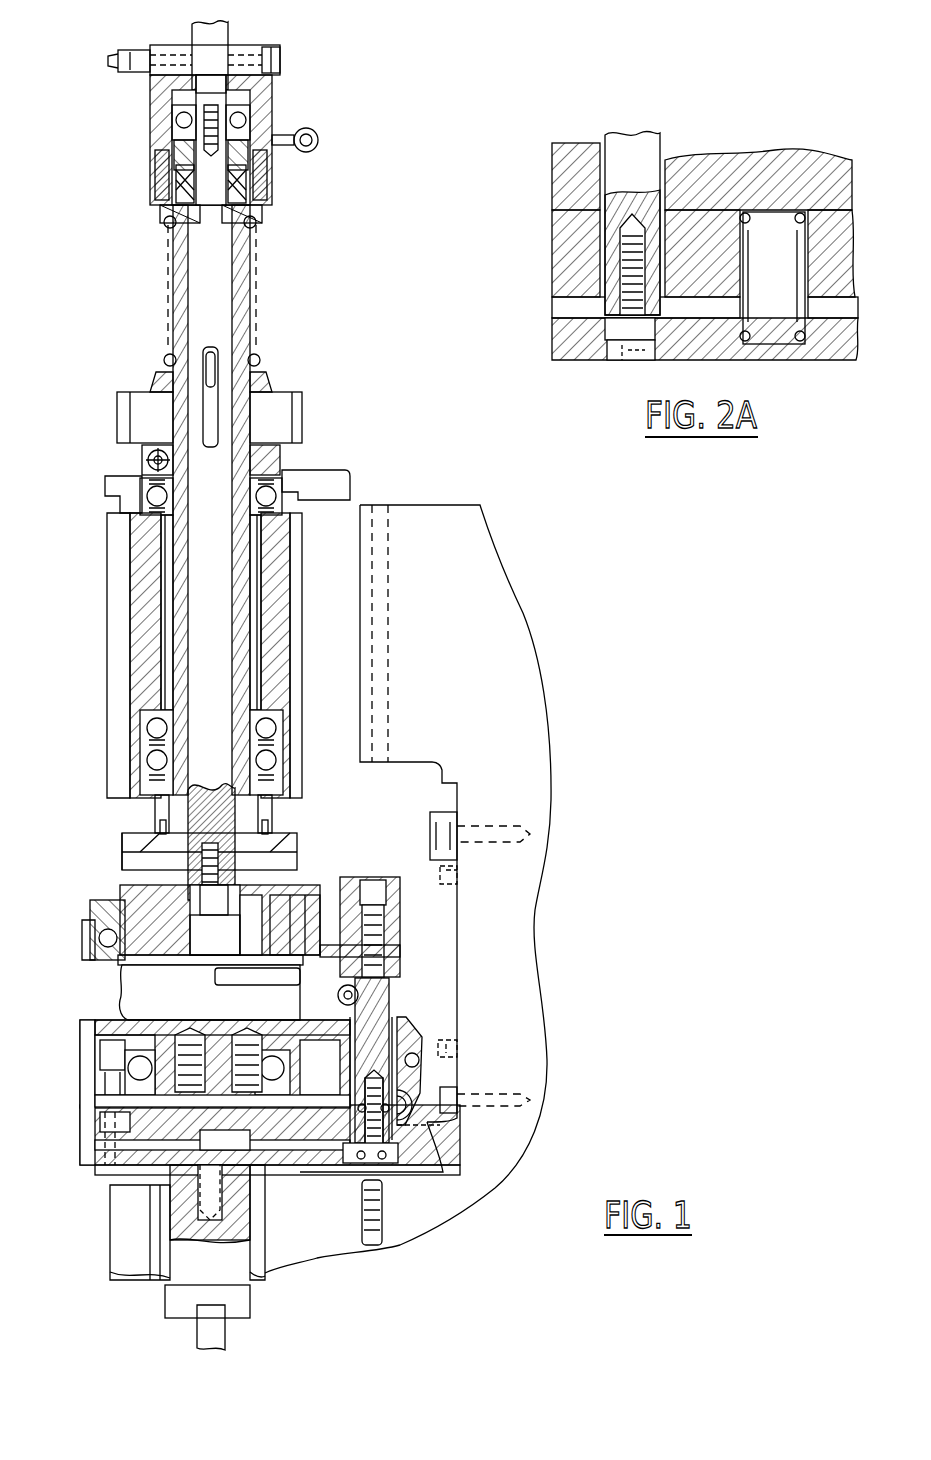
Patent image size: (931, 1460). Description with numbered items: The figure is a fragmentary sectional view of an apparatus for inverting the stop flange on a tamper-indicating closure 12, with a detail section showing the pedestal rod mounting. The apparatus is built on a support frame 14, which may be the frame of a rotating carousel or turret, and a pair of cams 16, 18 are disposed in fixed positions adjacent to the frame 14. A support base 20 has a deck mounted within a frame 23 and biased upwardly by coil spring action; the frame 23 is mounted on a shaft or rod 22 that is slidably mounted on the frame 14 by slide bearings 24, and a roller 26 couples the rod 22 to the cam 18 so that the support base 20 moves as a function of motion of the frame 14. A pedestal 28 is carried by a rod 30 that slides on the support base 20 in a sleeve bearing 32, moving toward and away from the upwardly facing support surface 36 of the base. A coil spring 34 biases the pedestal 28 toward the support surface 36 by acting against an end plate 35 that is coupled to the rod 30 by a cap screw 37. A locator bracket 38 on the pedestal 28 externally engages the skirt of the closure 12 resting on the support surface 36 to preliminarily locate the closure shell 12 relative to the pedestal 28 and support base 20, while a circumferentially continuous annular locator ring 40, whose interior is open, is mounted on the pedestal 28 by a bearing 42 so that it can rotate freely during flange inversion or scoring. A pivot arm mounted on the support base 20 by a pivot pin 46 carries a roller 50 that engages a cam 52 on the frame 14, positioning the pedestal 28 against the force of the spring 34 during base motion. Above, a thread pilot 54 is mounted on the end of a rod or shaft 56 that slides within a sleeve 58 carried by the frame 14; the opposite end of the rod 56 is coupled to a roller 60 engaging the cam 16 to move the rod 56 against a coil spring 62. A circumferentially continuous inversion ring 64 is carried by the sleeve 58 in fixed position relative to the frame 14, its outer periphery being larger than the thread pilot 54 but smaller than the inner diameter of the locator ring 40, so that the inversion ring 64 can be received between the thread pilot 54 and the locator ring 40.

In FIG. 1, the tamper-indicating closure 12 is at (118, 995).
In FIG. 1, the support frame 14 is at (490, 518).
In FIG. 1, the cam 16 is at (230, 30).
In FIG. 1, the cam 18 is at (228, 1340).
In FIG. 1, the support base 20 is at (78, 1060).
In FIG. 1, the shaft or rod 22 is at (148, 1185).
In FIG. 2A, the frame 23 is at (556, 261).
In FIG. 1, the slide bearings 24 is at (140, 1225).
In FIG. 1, the roller 26 is at (225, 1308).
In FIG. 1, the pedestal 28 is at (78, 938).
In FIG. 1, the rod 30 is at (385, 997).
In FIG. 2A, the rod 30 is at (660, 140).
In FIG. 1, the sleeve bearing 32 is at (380, 1148).
In FIG. 2A, the sleeve bearing 32 is at (600, 262).
In FIG. 1, the coil spring 34 is at (362, 1160).
In FIG. 2A, the coil spring 34 is at (798, 342).
In FIG. 2A, the end plate 35 is at (560, 327).
In FIG. 1, the support surface 36 is at (105, 1022).
In FIG. 2A, the cap screw 37 is at (615, 352).
In FIG. 1, the locator bracket 38 is at (402, 980).
In FIG. 1, the locator ring 40 is at (296, 895).
In FIG. 1, the bearing 42 is at (105, 915).
In FIG. 1, the pivot pin 46 is at (420, 1064).
In FIG. 1, the roller 50 is at (415, 1115).
In FIG. 1, the cam 52 is at (432, 1050).
In FIG. 1, the thread pilot 54 is at (170, 905).
In FIG. 1, the rod or shaft 56 is at (200, 615).
In FIG. 1, the sleeve 58 is at (180, 545).
In FIG. 1, the roller 60 is at (242, 46).
In FIG. 1, the coil spring 62 is at (252, 335).
In FIG. 1, the inversion ring 64 is at (290, 835).